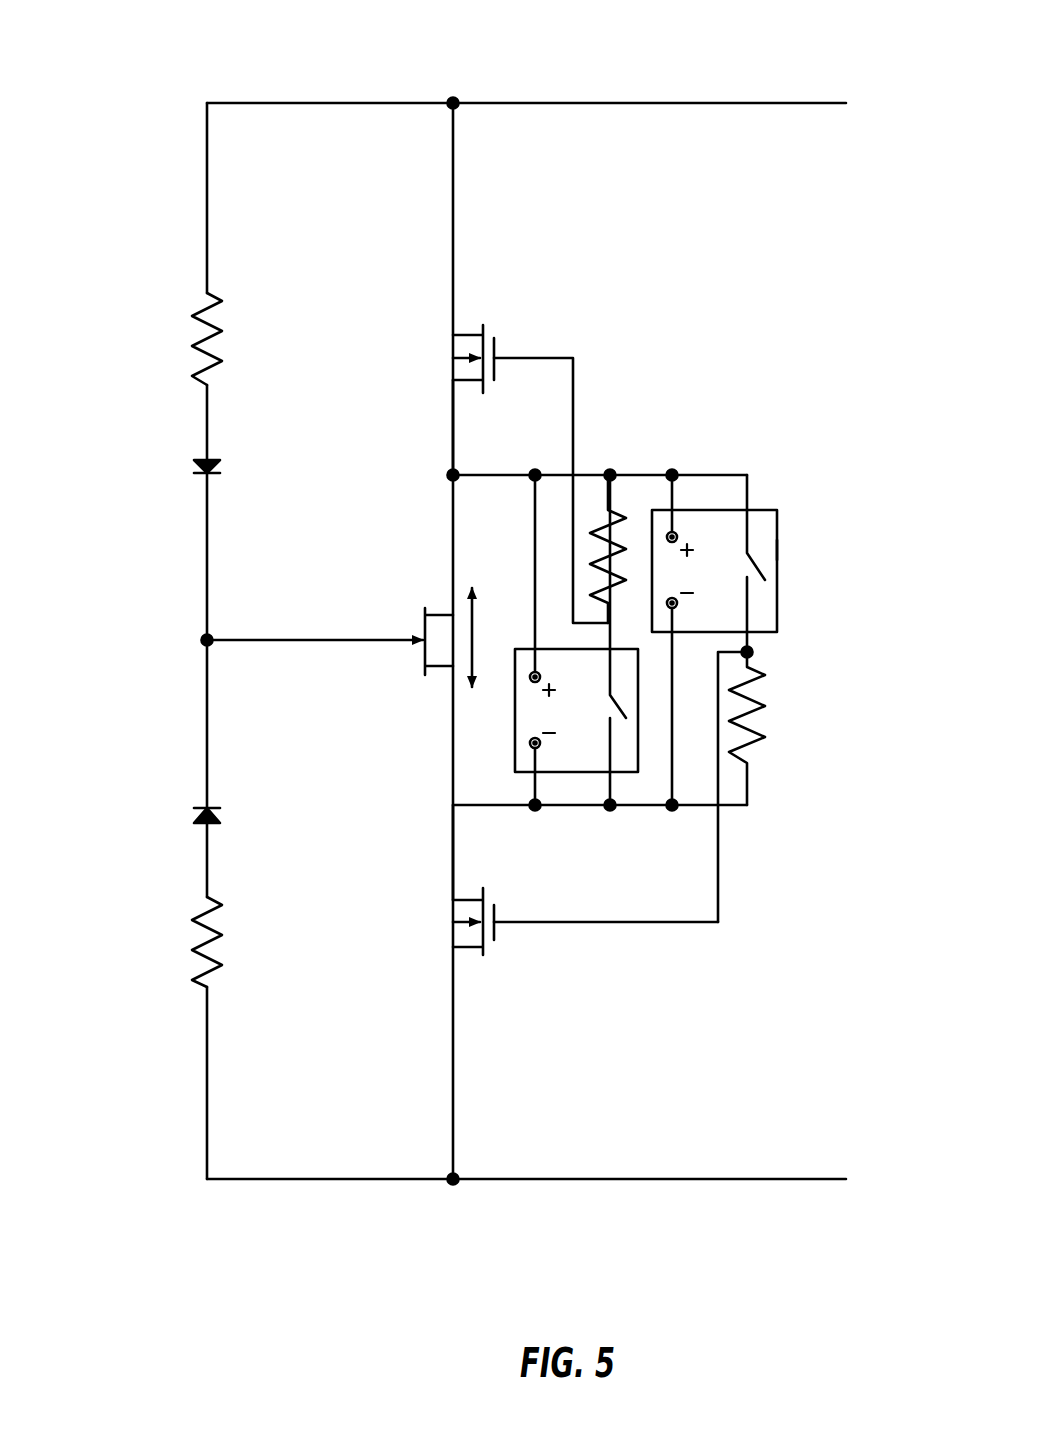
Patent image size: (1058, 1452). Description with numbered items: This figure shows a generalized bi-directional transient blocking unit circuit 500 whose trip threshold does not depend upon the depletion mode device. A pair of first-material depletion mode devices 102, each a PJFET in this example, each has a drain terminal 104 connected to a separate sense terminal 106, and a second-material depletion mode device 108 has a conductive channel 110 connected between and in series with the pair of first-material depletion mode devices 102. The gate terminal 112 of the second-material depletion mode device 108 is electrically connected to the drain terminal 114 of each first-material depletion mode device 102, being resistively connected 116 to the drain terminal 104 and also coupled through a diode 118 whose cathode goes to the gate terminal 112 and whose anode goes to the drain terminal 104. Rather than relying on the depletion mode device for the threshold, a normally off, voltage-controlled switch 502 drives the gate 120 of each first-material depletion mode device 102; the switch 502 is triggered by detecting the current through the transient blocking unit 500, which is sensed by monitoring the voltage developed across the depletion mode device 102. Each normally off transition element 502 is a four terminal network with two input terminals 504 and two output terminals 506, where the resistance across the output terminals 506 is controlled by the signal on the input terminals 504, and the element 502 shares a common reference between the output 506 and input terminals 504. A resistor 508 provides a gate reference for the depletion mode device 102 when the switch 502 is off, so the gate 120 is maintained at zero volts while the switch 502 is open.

The transient blocking unit (TBU) circuit 500 is at (124, 86).
The first-material depletion mode device 102 is at (520, 321).
The drain terminal 104 is at (462, 335).
The sense terminal 106 is at (542, 101).
The second-material depletion mode device 108 is at (400, 590).
The conductive channel 110 is at (475, 645).
The gate terminal 112 is at (410, 642).
The drain terminal 114 is at (457, 385).
The resistive connection 116 is at (218, 312).
The diode 118 is at (215, 457).
The gate 120 is at (505, 358).
The normally off switch (transition element) 502 is at (777, 548).
The input terminals 504 is at (672, 500).
The output terminals 506 is at (752, 650).
The resistor 508 is at (622, 518).